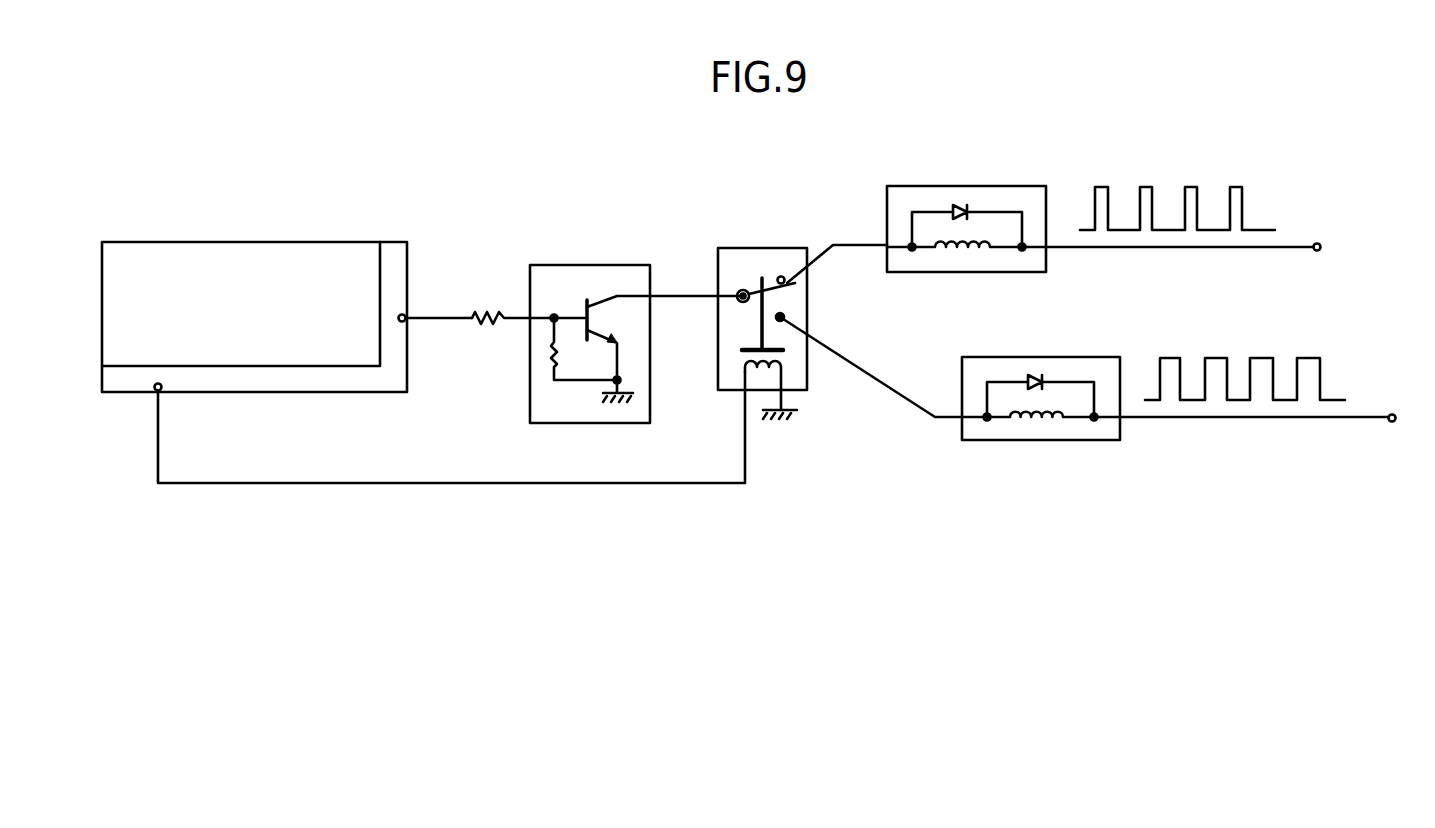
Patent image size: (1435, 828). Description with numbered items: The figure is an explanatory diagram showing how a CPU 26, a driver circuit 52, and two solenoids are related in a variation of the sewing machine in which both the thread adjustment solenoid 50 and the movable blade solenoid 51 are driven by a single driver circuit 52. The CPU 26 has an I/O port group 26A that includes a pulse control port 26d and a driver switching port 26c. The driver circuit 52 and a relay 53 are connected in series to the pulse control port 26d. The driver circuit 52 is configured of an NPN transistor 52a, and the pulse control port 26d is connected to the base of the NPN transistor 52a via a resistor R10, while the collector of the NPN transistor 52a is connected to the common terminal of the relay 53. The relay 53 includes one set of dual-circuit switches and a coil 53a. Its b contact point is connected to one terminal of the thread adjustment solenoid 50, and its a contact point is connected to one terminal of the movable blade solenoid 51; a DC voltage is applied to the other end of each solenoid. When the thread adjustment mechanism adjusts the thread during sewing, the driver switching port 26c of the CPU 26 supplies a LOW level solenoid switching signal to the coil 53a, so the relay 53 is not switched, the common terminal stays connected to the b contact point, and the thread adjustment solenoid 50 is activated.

The CPU 26 is at (239, 242).
The I/O port group 26A is at (133, 366).
The driver switching port 26c is at (161, 384).
The pulse control port 26d is at (399, 318).
The resistor R10 is at (478, 327).
The driver circuit 52 is at (605, 319).
The NPN transistor 52a is at (587, 300).
The relay 53 is at (840, 314).
The coil 53a is at (783, 370).
The thread adjustment solenoid 50 is at (977, 186).
The movable blade solenoid 51 is at (1050, 357).